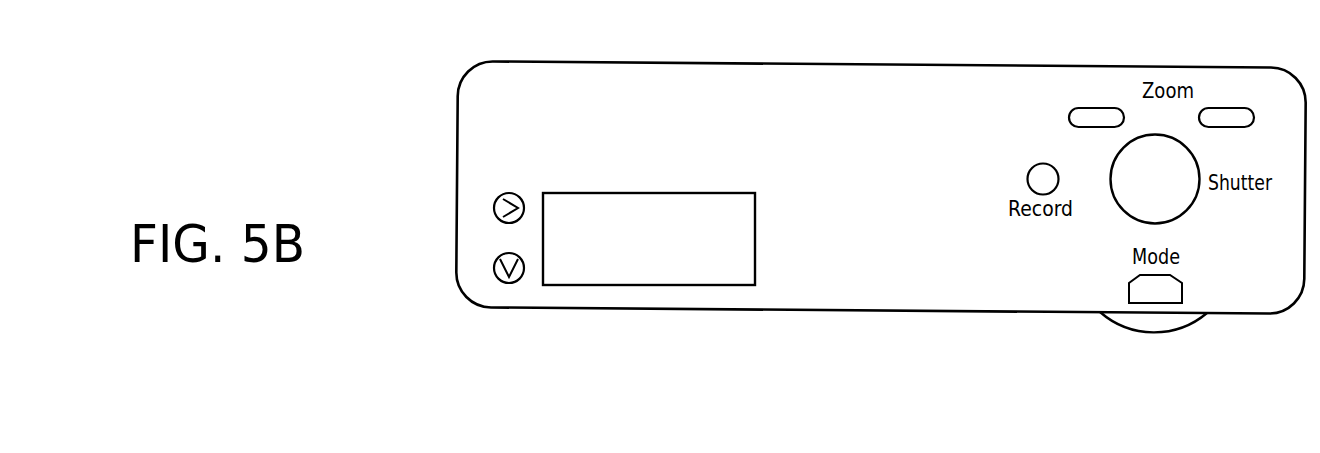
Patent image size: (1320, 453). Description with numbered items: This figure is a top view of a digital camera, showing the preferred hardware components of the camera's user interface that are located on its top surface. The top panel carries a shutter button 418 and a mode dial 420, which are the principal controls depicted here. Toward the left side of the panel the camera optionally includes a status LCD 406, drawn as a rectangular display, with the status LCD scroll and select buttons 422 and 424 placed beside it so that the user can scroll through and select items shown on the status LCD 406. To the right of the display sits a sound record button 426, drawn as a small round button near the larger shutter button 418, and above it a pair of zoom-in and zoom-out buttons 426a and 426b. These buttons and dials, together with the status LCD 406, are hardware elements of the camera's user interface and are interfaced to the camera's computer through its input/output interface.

The status LCD 406 is at (652, 285).
The shutter button 418 is at (1122, 208).
The mode dial 420 is at (1192, 328).
The status LCD scroll button 422 is at (493, 209).
The status LCD select button 424 is at (493, 269).
The sound record button 426 is at (1028, 174).
The zoom-in button 426a is at (1117, 108).
The zoom-out button 426b is at (1244, 108).